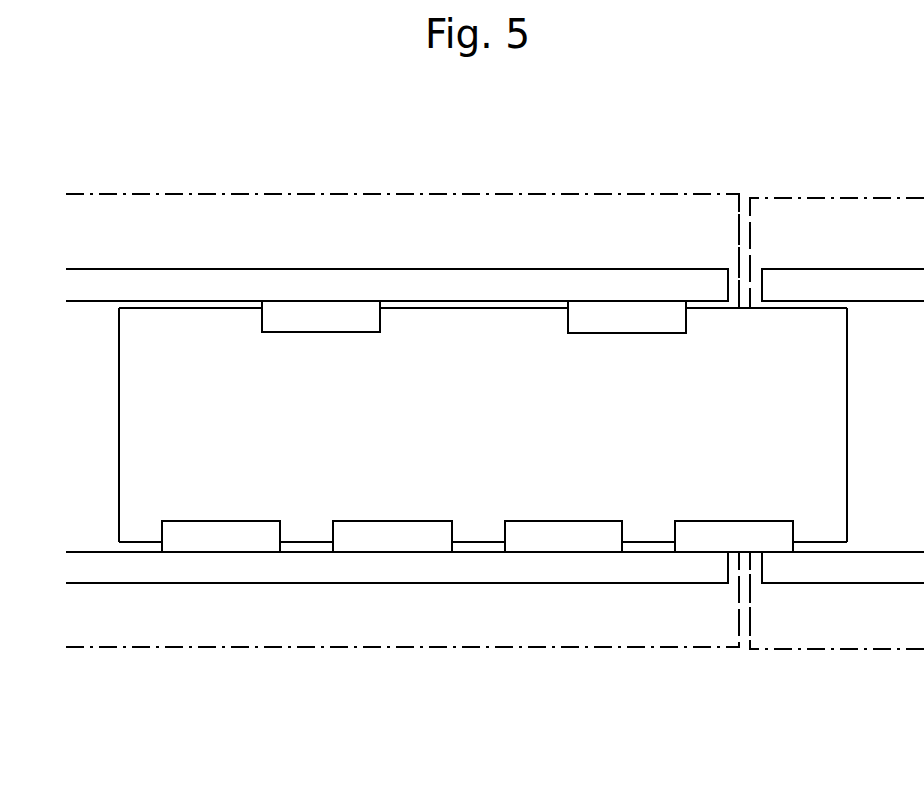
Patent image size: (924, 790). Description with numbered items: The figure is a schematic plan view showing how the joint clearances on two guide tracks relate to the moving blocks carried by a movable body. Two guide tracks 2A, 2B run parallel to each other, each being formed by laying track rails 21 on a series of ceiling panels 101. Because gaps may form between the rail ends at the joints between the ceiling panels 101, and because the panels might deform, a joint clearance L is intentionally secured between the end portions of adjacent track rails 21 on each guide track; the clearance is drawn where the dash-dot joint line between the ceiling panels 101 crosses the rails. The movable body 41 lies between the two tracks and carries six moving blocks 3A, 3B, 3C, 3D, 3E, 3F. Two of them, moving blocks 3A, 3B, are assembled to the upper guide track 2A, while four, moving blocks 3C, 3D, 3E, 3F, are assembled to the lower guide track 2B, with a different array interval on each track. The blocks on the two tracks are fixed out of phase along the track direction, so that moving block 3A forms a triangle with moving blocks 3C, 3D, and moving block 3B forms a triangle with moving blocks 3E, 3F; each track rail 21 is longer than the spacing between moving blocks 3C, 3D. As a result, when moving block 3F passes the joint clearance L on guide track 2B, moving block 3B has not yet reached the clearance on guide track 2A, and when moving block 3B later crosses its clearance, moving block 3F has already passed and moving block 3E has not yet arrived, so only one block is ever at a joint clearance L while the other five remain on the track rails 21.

The guide track 2A is at (185, 258).
The guide track 2B is at (170, 588).
The track rail 21 is at (370, 283).
The ceiling panel 101 is at (487, 192).
The joint clearance L is at (731, 258).
The movable body 41 is at (830, 425).
The moving block 3A is at (313, 320).
The moving block 3B is at (640, 322).
The moving block 3C is at (224, 535).
The moving block 3D is at (390, 535).
The moving block 3E is at (572, 535).
The moving block 3F is at (727, 532).